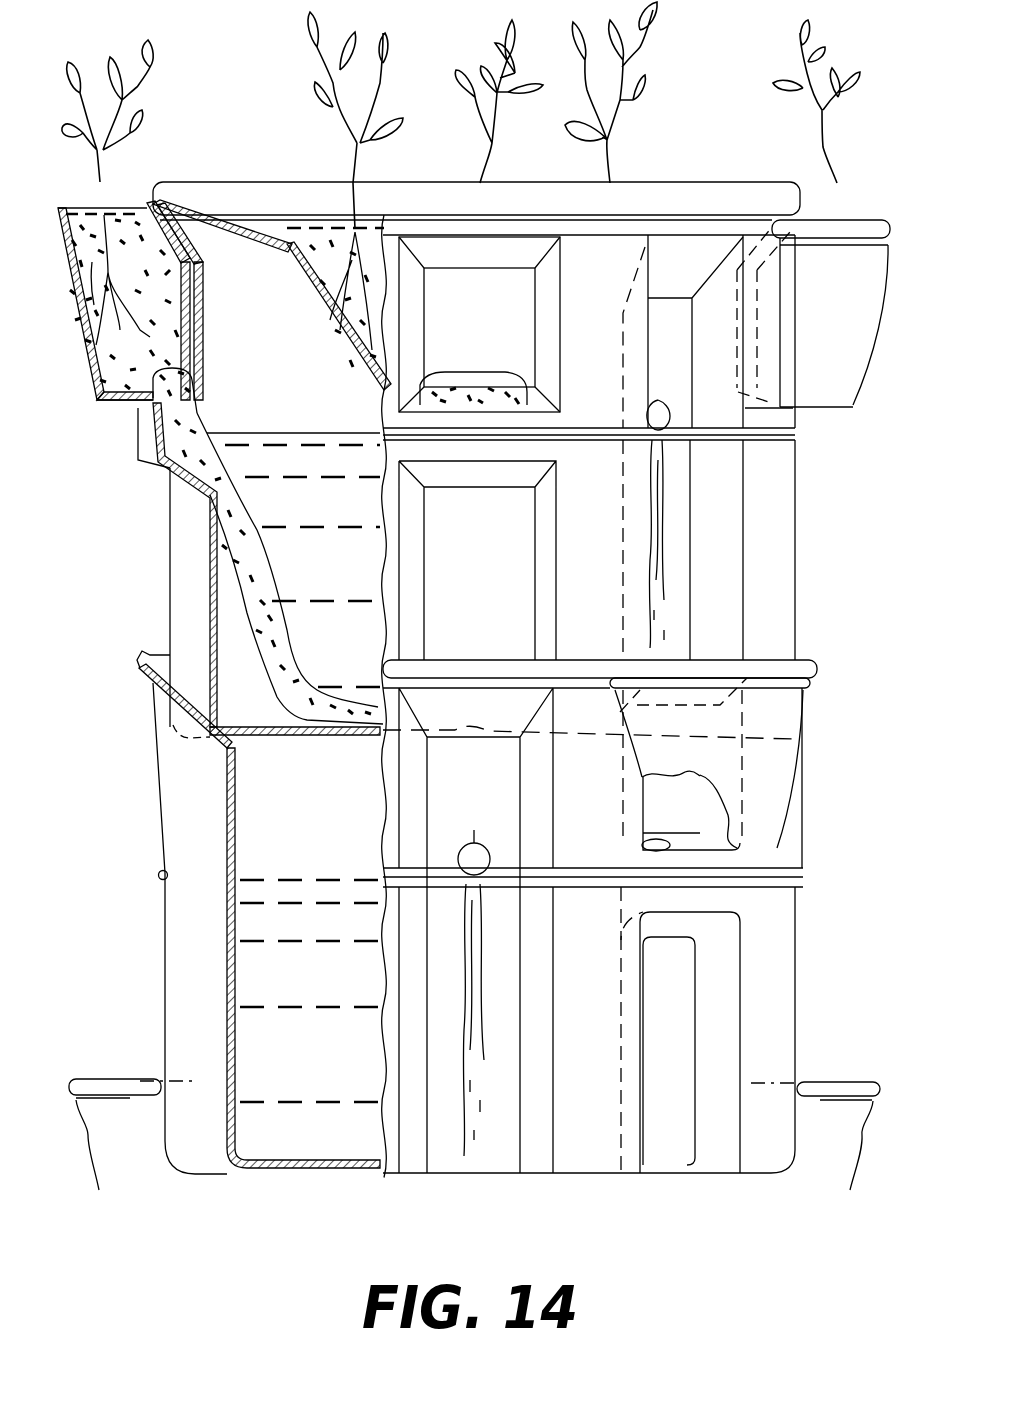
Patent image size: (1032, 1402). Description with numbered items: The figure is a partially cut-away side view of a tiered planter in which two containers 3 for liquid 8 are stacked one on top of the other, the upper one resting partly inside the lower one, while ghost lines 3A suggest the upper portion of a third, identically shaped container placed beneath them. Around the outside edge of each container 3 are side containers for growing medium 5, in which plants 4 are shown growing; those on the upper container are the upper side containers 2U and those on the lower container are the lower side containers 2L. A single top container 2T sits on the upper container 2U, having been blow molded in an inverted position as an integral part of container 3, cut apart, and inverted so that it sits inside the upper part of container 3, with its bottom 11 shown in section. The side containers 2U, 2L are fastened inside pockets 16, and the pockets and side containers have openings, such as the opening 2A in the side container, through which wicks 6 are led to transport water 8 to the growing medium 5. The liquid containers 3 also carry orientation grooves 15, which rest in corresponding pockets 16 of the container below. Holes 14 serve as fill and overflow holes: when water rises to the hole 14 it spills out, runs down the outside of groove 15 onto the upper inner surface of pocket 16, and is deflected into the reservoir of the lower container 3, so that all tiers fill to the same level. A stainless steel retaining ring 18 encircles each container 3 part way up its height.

The plant 4 is at (152, 68).
The growing medium 5 is at (326, 233).
The pot bottom 11 is at (101, 397).
The top container 2T is at (737, 183).
The upper side container 2U is at (850, 330).
The pocket 16 is at (538, 340).
The wick 6 is at (456, 376).
The opening 2A is at (151, 408).
The liquid 8 is at (218, 595).
The retaining ring 18 is at (797, 433).
The container for liquid 3 is at (800, 922).
The orientation groove 15 is at (538, 615).
The lower side container 2L is at (790, 767).
The hole 14 is at (474, 845).
The ghost lines 3A is at (850, 1078).